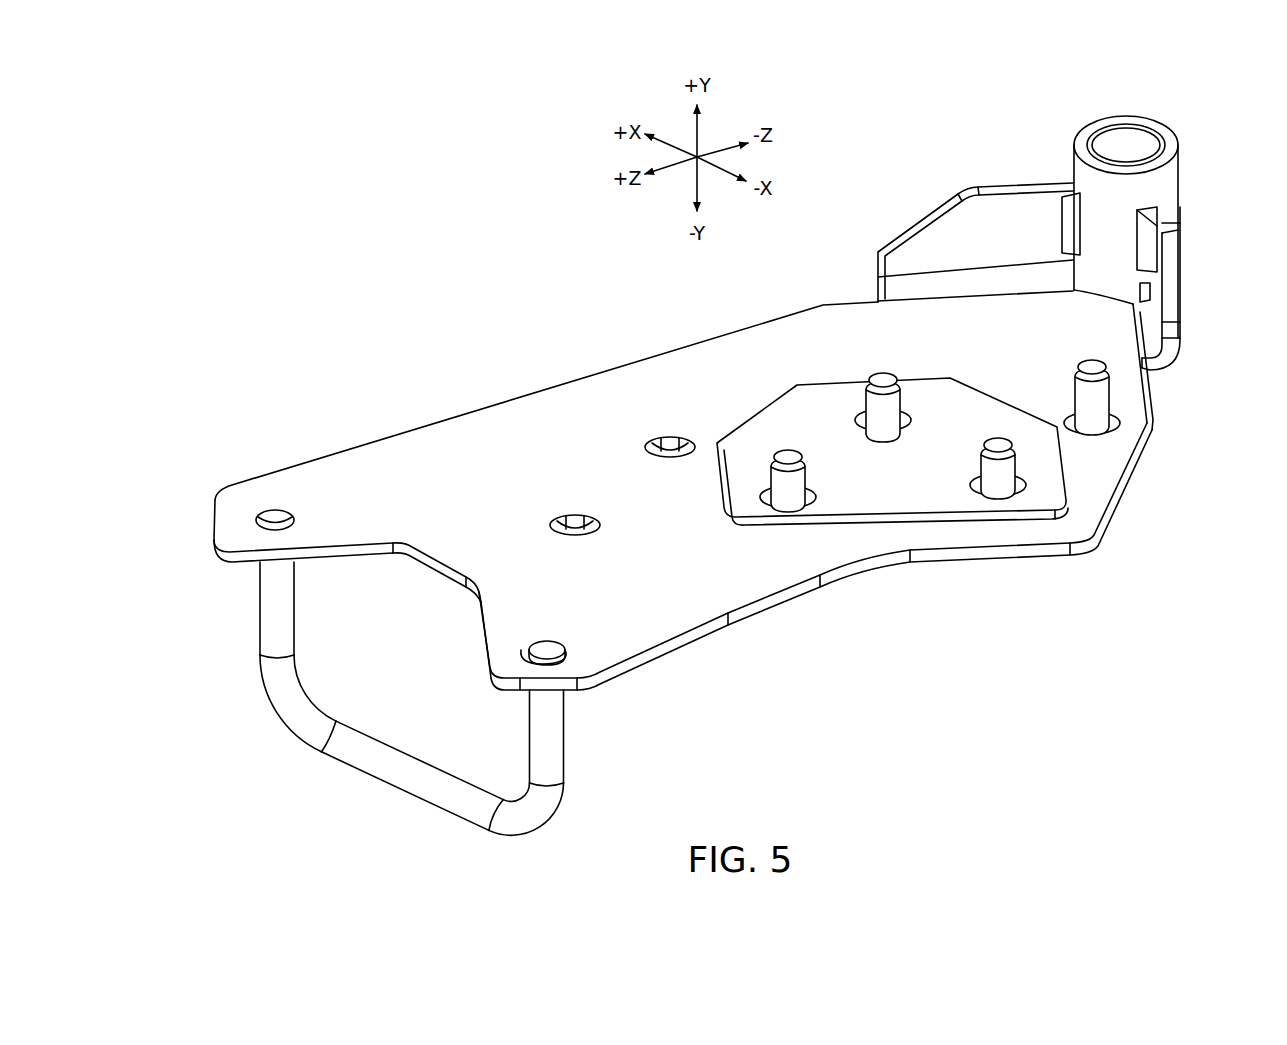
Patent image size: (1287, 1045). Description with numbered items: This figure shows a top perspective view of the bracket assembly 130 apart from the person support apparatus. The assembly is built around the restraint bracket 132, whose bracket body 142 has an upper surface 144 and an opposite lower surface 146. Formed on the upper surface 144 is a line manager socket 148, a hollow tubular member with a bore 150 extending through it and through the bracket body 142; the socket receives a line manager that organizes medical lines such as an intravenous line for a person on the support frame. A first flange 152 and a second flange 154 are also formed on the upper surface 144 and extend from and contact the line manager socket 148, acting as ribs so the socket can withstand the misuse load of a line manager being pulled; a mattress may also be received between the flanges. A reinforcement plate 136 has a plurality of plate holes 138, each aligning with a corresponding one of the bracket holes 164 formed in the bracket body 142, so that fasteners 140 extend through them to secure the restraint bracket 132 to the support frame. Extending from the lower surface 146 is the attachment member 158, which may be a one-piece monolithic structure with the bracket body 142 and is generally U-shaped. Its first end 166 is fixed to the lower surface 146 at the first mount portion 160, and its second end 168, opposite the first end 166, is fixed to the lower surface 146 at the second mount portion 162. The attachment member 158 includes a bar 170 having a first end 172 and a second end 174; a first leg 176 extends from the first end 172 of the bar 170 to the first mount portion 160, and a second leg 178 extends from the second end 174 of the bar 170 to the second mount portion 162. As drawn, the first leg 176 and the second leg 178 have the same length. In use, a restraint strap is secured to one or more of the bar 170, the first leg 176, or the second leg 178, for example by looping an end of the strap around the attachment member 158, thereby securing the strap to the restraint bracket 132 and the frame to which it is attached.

The bracket assembly 130 is at (391, 342).
The restraint bracket 132 is at (585, 365).
The reinforcement plate 136 is at (753, 537).
The plate holes 138 is at (917, 420).
The fasteners 140 is at (1083, 392).
The bracket body 142 is at (658, 670).
The upper surface 144 is at (387, 458).
The lower surface 146 is at (1012, 562).
The line manager socket 148 is at (1172, 142).
The bore 150 is at (1137, 143).
The first flange 152 is at (1172, 310).
The second flange 154 is at (993, 188).
The attachment member 158 is at (358, 838).
The first mount portion 160 is at (537, 641).
The second mount portion 162 is at (298, 520).
The bracket holes 164 is at (670, 437).
The first end 166 is at (570, 641).
The second end 168 is at (233, 528).
The bar 170 is at (388, 780).
The first end 172 is at (510, 835).
The second end 174 is at (272, 703).
The first leg 176 is at (570, 763).
The second leg 178 is at (257, 610).